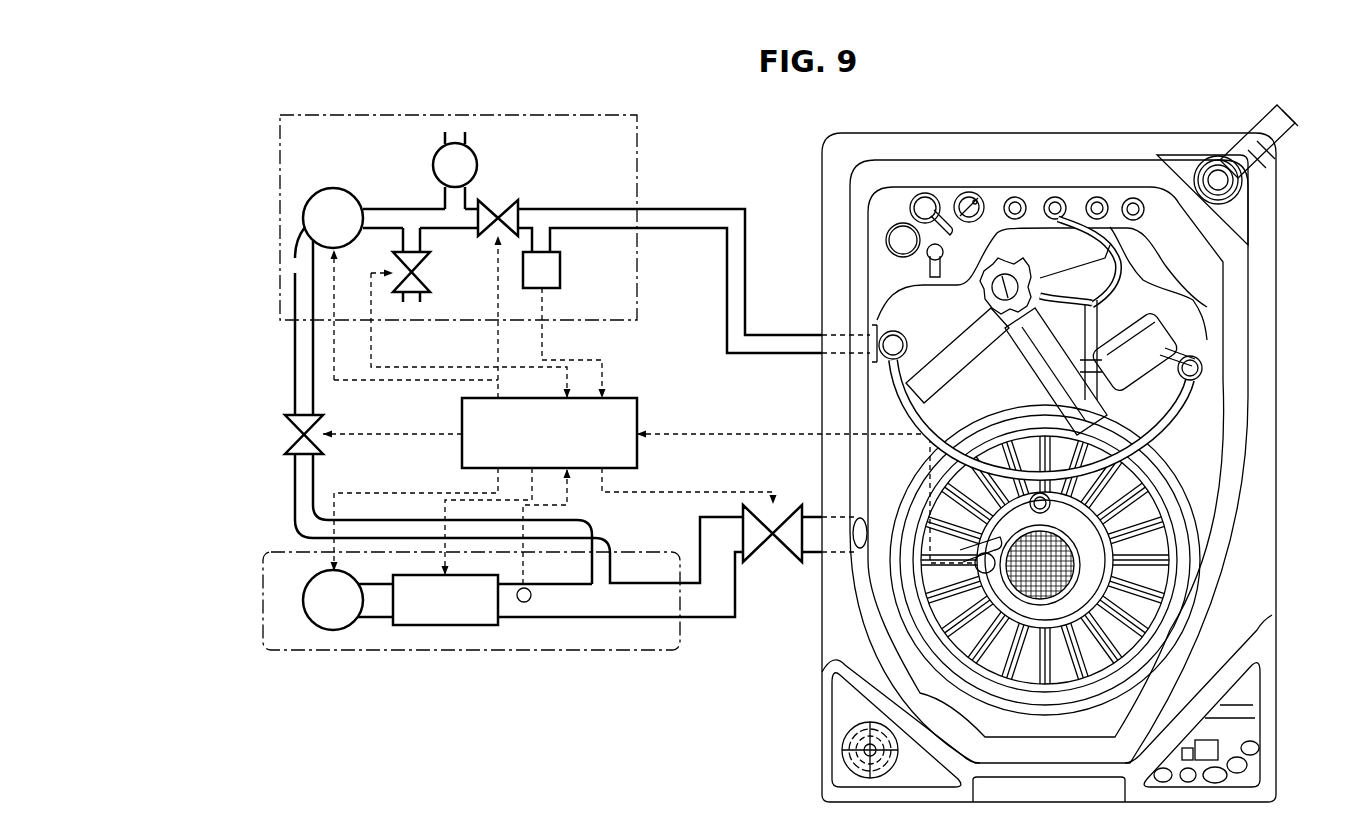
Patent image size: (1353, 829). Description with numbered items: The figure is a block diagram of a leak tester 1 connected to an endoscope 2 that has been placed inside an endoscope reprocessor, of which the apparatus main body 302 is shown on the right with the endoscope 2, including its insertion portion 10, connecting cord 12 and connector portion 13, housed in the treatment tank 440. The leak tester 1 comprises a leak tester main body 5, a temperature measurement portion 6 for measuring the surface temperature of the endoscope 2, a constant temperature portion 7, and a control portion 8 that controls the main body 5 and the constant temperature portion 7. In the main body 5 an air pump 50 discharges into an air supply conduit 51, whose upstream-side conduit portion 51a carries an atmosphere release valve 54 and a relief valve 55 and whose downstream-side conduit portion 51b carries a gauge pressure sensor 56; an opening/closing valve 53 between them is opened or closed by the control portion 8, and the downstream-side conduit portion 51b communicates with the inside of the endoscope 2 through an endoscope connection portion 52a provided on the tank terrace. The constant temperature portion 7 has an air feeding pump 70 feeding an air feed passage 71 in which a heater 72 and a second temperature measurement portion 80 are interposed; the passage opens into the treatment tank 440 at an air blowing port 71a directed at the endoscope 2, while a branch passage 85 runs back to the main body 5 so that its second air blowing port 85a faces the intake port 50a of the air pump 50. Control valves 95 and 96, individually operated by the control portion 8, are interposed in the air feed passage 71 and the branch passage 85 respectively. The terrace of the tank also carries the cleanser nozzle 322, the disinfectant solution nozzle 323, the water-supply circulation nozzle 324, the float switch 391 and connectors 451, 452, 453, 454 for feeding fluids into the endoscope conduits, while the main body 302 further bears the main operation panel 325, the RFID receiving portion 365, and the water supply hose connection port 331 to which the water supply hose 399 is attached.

The leak tester 1 is at (731, 143).
The endoscope 2 is at (1040, 439).
The leak tester main body 5 is at (653, 166).
The temperature measurement portion 6 is at (915, 590).
The constant temperature portion 7 is at (421, 676).
The control portion 8 is at (638, 412).
The insertion portion 10 is at (1175, 525).
The connecting cord 12 is at (893, 462).
The connector portion 13 is at (1047, 340).
The air pump 50 is at (338, 188).
The intake port 50a is at (291, 256).
The air supply conduit 51 is at (620, 261).
The upstream-side conduit portion 51a is at (385, 208).
The downstream-side conduit portion 51b is at (747, 242).
The endoscope connection portion 52a is at (880, 347).
The opening/closing valve 53 is at (498, 212).
The atmosphere release valve 54 is at (426, 270).
The relief valve 55 is at (477, 158).
The gauge pressure sensor 56 is at (562, 270).
The air feeding pump 70 is at (330, 633).
The air feed passage 71 is at (558, 620).
The air blowing port 71a is at (856, 554).
The heater 72 is at (466, 628).
The second temperature measurement portion 80 is at (524, 605).
The branch passage 85 is at (491, 405).
The second air blowing port 85a is at (293, 276).
The control valve 95 is at (777, 548).
The control valve 96 is at (290, 434).
The apparatus main body 302 is at (1278, 590).
The cleanser nozzle 322 is at (927, 268).
The disinfectant solution nozzle 323 is at (918, 196).
The water-supply circulation nozzle 324 is at (966, 196).
The main operation panel 325 is at (1240, 732).
The water supply hose connection port 331 is at (1240, 186).
The receiving portion 365 is at (843, 760).
The float switch 391 is at (888, 242).
The water supply hose 399 is at (1250, 116).
The treatment tank 440 is at (895, 400).
The connector 451 is at (1014, 197).
The connector 452 is at (1050, 197).
The connector 453 is at (1095, 197).
The connector 454 is at (1130, 198).